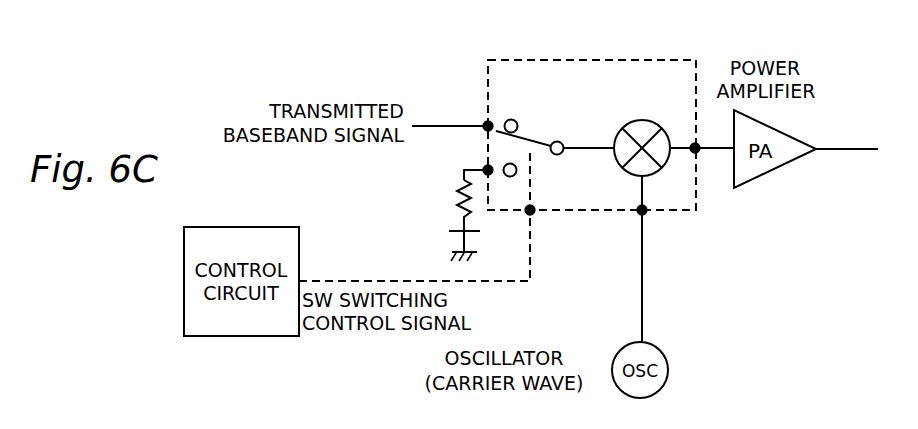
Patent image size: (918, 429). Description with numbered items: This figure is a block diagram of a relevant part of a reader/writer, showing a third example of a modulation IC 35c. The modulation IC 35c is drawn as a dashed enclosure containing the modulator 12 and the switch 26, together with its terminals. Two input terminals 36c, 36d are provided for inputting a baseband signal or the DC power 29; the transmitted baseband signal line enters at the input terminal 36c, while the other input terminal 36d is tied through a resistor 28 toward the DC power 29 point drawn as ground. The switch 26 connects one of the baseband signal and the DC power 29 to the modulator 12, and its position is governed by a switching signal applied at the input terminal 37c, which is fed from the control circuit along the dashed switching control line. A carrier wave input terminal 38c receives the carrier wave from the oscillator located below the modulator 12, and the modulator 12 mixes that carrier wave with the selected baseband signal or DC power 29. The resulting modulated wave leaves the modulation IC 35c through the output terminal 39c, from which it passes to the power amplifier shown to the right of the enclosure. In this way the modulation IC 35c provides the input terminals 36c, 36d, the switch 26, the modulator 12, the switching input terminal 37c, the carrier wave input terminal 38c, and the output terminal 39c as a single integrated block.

The modulator 12 is at (638, 121).
The switch 26 is at (541, 141).
The resistor 28 is at (454, 188).
The DC power 29 is at (454, 232).
The modulation IC 35c is at (668, 60).
The input terminal 36c is at (486, 121).
The input terminal 36d is at (484, 167).
The input terminal 37c is at (532, 213).
The carrier wave input terminal 38c is at (644, 213).
The output terminal 39c is at (697, 152).